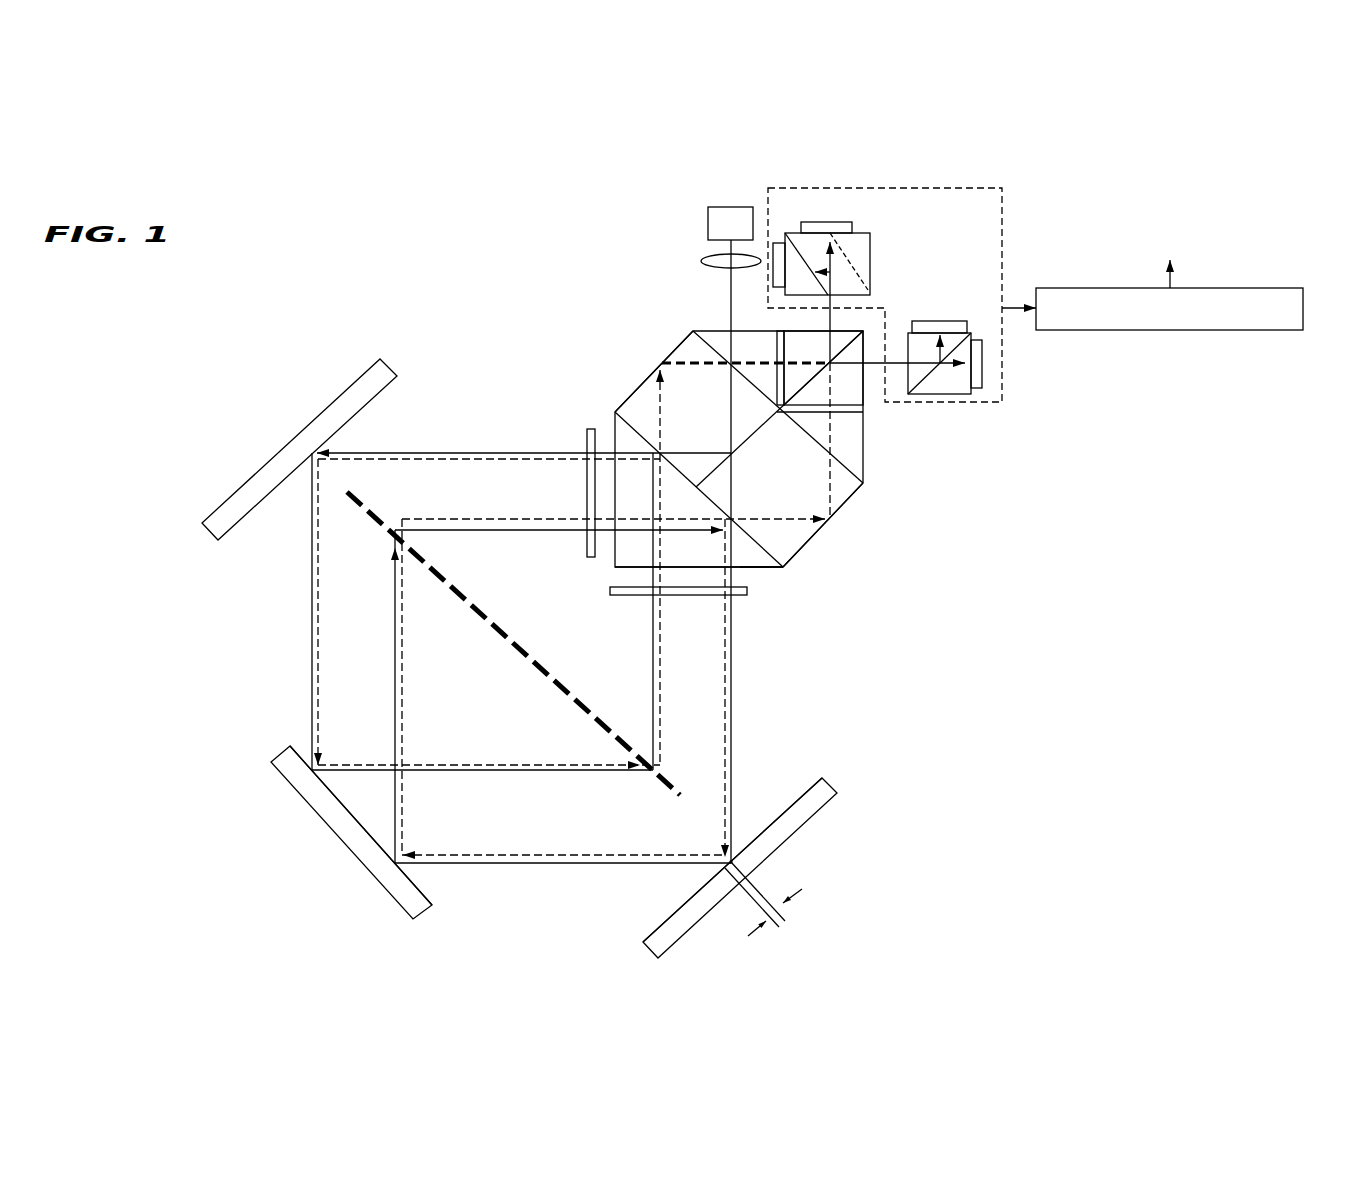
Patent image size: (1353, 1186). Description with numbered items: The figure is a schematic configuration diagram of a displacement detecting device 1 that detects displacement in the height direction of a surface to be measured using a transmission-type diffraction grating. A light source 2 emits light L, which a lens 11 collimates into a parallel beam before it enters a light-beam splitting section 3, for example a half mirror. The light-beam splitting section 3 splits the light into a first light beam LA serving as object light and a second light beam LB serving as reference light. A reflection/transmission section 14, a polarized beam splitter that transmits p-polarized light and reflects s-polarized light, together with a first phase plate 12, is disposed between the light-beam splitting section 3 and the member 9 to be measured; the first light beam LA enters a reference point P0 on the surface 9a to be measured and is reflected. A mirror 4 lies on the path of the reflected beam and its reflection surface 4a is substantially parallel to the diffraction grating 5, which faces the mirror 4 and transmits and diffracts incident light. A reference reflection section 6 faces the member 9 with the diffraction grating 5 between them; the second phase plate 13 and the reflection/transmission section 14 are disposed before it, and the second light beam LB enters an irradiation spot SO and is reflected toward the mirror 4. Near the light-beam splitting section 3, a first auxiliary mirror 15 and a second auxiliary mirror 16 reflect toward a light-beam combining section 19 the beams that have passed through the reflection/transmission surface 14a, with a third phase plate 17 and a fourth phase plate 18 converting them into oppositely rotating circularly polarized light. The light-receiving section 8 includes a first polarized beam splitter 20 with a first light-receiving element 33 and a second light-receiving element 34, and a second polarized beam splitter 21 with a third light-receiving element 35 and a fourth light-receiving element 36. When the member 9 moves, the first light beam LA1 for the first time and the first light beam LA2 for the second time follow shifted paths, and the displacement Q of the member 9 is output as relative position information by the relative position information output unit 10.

The displacement detecting device 1 is at (560, 214).
The light source 2 is at (733, 207).
The light-beam splitting section 3 is at (858, 473).
The mirror 4 is at (393, 902).
The reflection surface 4a is at (422, 890).
The transmission-type diffraction grating 5 is at (677, 780).
The reference reflection section 6 is at (273, 457).
The light-receiving section 8 is at (1002, 207).
The member to be measured 9 is at (687, 935).
The surface to be measured 9a is at (797, 797).
The relative position information output unit 10 is at (1230, 330).
The lens 11 is at (703, 261).
The first phase plate 12 is at (748, 594).
The second phase plate 13 is at (586, 443).
The reflection/transmission section 14 is at (758, 570).
The reflection/transmission surface 14a is at (783, 567).
The first auxiliary mirror 15 is at (820, 530).
The second auxiliary mirror 16 is at (643, 377).
The third phase plate 17 is at (863, 412).
The fourth phase plate 18 is at (776, 345).
The light-beam combining section 19 is at (850, 347).
The first polarized beam splitter 20 is at (870, 247).
The second polarized beam splitter 21 is at (940, 394).
The first light-receiving element 33 is at (780, 243).
The second light-receiving element 34 is at (825, 222).
The third light-receiving element 35 is at (937, 321).
The fourth light-receiving element 36 is at (982, 362).
The light L is at (728, 402).
The first light beam LA is at (730, 502).
The second light beam LB is at (688, 452).
The first light beam for the first time LA1 is at (733, 667).
The first light beam for the second time LA2 is at (728, 693).
The irradiation spot SO is at (322, 450).
The reference point P0 is at (733, 860).
The displacement amount Q is at (763, 903).